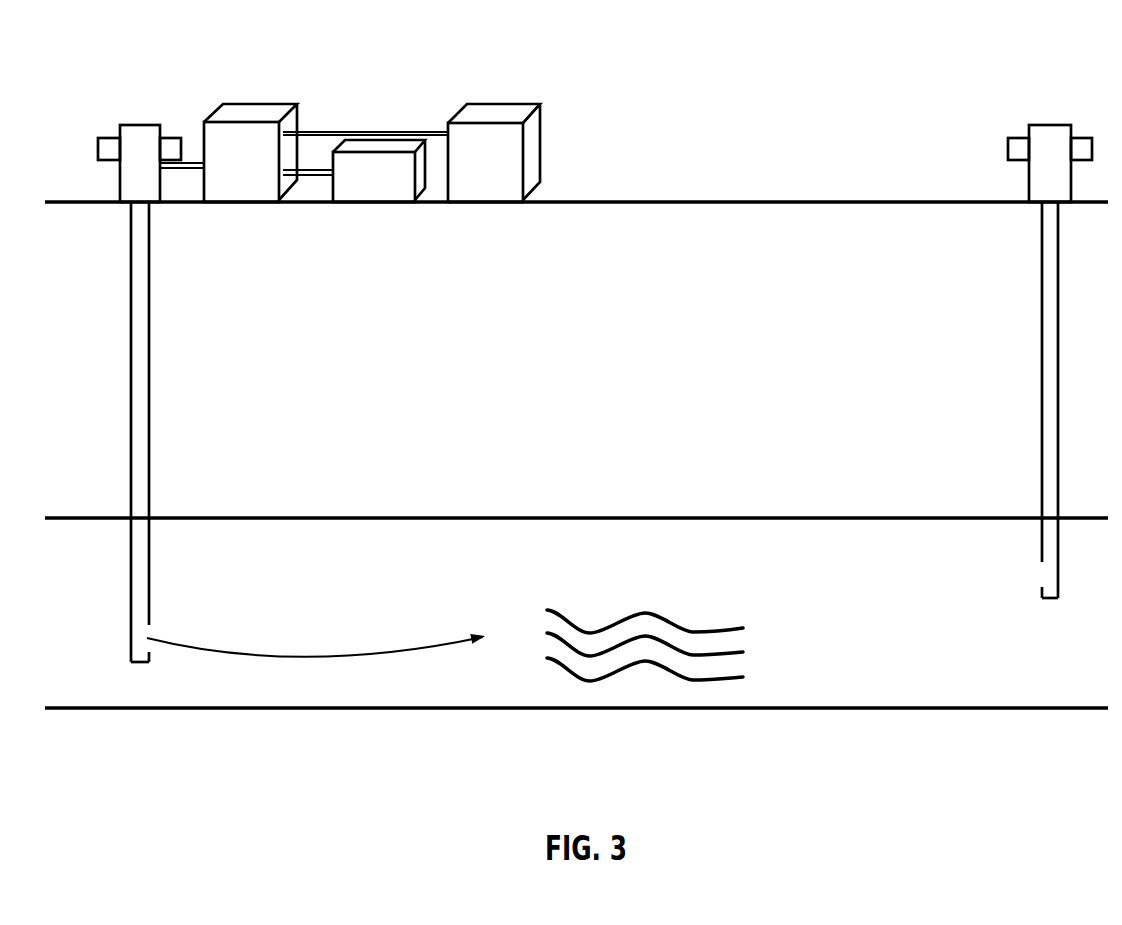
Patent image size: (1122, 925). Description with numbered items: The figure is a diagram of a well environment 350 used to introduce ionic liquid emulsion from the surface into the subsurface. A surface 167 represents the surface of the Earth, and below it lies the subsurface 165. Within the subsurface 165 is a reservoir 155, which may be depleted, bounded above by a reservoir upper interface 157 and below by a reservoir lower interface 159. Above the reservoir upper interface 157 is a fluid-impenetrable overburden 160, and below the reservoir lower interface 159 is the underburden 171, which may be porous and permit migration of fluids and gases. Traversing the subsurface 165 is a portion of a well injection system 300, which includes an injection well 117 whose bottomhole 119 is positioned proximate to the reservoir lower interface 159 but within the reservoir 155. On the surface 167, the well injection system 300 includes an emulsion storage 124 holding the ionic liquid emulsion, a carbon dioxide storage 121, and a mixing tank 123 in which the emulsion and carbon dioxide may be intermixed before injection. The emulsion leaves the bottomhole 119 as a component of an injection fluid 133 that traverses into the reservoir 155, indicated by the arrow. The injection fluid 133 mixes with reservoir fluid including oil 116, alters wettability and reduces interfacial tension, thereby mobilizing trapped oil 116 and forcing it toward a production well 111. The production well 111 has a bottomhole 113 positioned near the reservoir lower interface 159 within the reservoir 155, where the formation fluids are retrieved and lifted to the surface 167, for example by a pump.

The well injection system 300 is at (229, 58).
The well environment 350 is at (688, 25).
The mixing tank 123 is at (266, 167).
The emulsion storage 124 is at (397, 192).
The carbon dioxide storage 121 is at (510, 177).
The surface 167 is at (727, 202).
The injection well 117 is at (149, 300).
The production well 111 is at (1042, 303).
The subsurface 165 is at (578, 380).
The overburden 160 is at (473, 494).
The reservoir upper interface 157 is at (850, 518).
The reservoir 155 is at (634, 569).
The oil 116 is at (732, 622).
The injection fluid 133 is at (311, 656).
The bottomhole of the injection well 119 is at (166, 652).
The bottomhole of the production well 113 is at (1038, 581).
The reservoir lower interface 159 is at (992, 708).
The underburden 171 is at (706, 777).